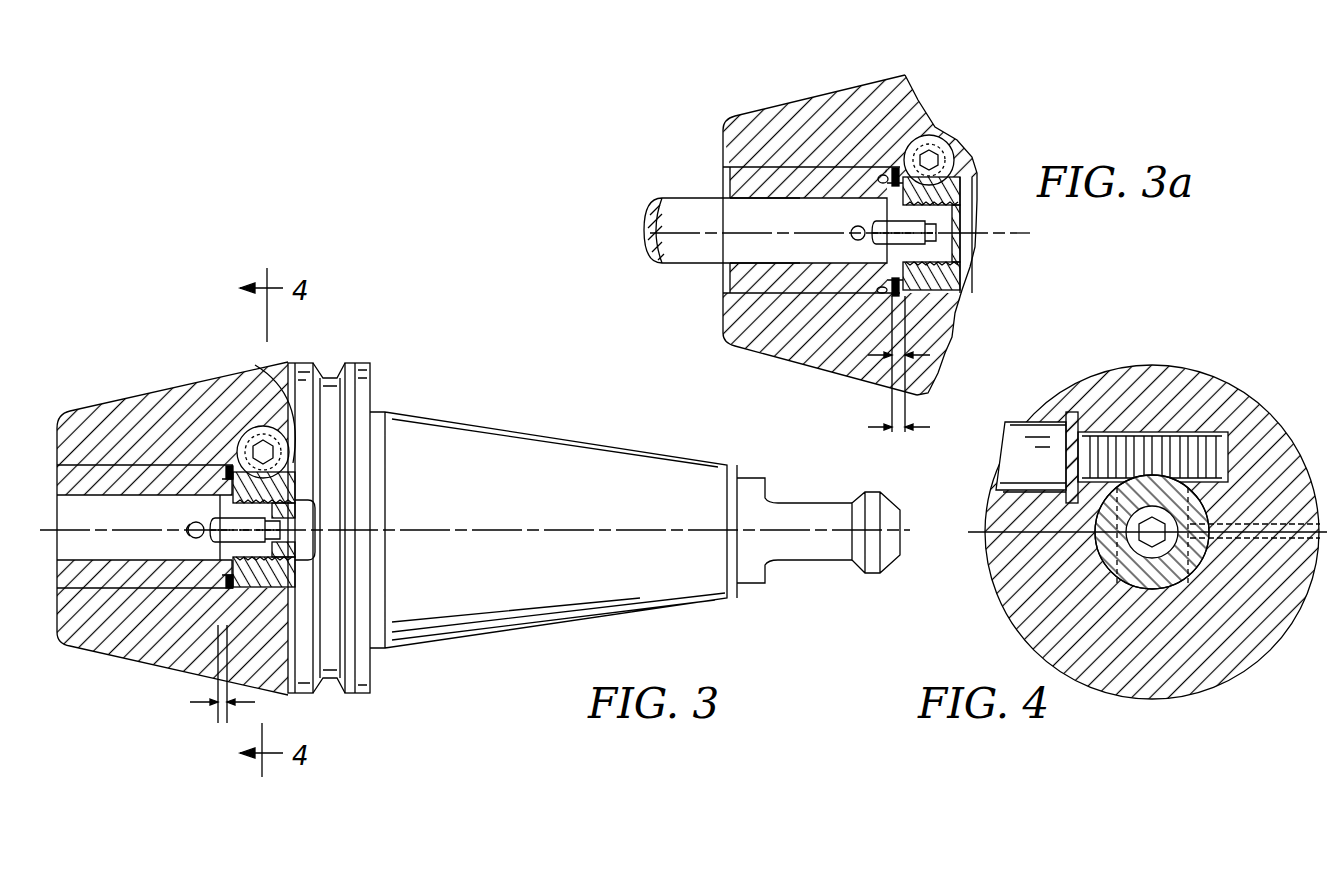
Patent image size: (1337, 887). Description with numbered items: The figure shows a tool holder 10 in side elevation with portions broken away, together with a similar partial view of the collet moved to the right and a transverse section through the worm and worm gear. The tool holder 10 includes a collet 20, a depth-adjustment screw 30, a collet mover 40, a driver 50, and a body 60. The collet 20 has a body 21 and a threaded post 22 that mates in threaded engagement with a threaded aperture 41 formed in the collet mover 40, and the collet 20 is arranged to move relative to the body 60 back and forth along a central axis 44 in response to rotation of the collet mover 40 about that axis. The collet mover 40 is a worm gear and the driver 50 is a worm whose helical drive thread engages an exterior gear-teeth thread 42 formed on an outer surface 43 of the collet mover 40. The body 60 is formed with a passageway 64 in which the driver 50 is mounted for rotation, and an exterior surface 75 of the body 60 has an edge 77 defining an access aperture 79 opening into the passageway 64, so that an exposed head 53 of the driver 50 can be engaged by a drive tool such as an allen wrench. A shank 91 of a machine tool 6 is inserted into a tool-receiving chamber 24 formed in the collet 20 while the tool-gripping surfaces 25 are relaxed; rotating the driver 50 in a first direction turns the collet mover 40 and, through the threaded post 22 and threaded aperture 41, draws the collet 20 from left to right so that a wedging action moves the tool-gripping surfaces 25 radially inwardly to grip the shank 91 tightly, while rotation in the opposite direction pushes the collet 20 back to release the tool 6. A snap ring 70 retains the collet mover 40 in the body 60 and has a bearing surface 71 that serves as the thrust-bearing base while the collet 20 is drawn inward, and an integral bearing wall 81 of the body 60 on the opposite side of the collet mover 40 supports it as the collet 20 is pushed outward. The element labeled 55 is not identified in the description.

In FIG. 3A, the machine tool 6 is at (675, 196).
In FIG. 3, the tool holder 10 is at (384, 304).
In FIG. 3, the collet 20 is at (145, 460).
In FIG. 3A, the collet 20 is at (805, 162).
In FIG. 3, the body 21 is at (100, 632).
In FIG. 3A, the body 21 is at (775, 352).
In FIG. 3, the threaded post 22 is at (293, 547).
In FIG. 3, the tool-receiving chamber 24 is at (122, 514).
In FIG. 3A, the tool-receiving chamber 24 is at (825, 198).
In FIG. 3, the tool-gripping surface 25 is at (140, 497).
In FIG. 3A, the tool-gripping surface 25 is at (800, 200).
In FIG. 3, the depth-adjustment screw 30 is at (207, 540).
In FIG. 3A, the depth-adjustment screw 30 is at (875, 244).
In FIG. 3, the collet mover 40 is at (290, 487).
In FIG. 4, the collet mover 40 is at (1115, 568).
In FIG. 3, the threaded aperture 41 is at (313, 525).
In FIG. 3, the exterior gear-teeth thread 42 is at (258, 680).
In FIG. 3, the outer surface 43 is at (293, 660).
In FIG. 3A, the outer surface 43 is at (952, 290).
In FIG. 3, the central axis 44 is at (505, 532).
In FIG. 4, the driver 50 is at (1193, 440).
In FIG. 3, the head 53 is at (233, 468).
In FIG. 4, the screw head 55 is at (1068, 472).
In FIG. 3, the body 60 is at (374, 364).
In FIG. 3, the passageway 64 is at (255, 437).
In FIG. 3A, the passageway 64 is at (905, 178).
In FIG. 4, the passageway 64 is at (1012, 487).
In FIG. 3, the snap ring 70 is at (225, 588).
In FIG. 3A, the snap ring 70 is at (890, 293).
In FIG. 3, the bearing surface 71 is at (305, 368).
In FIG. 3A, the bearing surface 71 is at (935, 158).
In FIG. 3, the exterior surface 75 is at (155, 392).
In FIG. 3A, the exterior surface 75 is at (836, 93).
In FIG. 4, the exterior surface 75 is at (995, 578).
In FIG. 4, the edge 77 is at (1060, 490).
In FIG. 4, the access aperture 79 is at (1012, 432).
In FIG. 3, the integral bearing wall 81 is at (257, 587).
In FIG. 3A, the integral bearing wall 81 is at (950, 272).
In FIG. 3A, the shank 91 is at (707, 212).